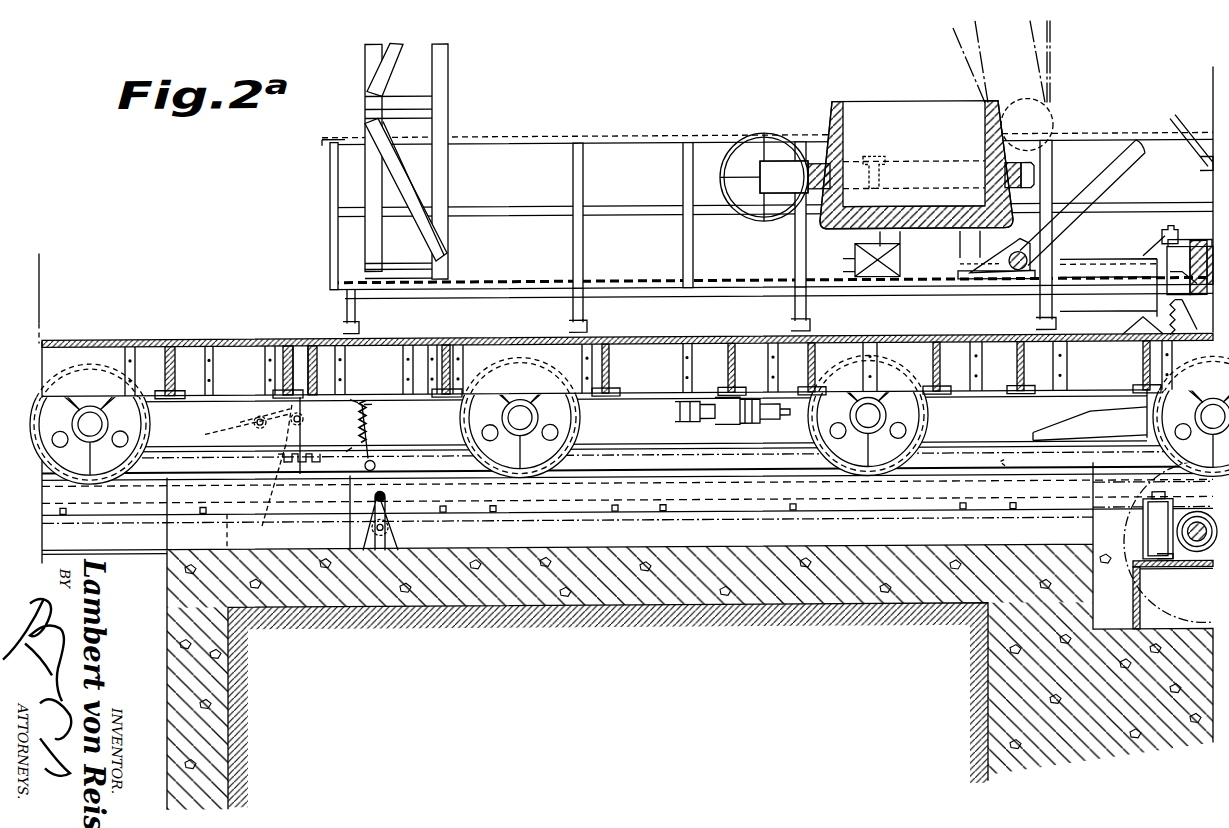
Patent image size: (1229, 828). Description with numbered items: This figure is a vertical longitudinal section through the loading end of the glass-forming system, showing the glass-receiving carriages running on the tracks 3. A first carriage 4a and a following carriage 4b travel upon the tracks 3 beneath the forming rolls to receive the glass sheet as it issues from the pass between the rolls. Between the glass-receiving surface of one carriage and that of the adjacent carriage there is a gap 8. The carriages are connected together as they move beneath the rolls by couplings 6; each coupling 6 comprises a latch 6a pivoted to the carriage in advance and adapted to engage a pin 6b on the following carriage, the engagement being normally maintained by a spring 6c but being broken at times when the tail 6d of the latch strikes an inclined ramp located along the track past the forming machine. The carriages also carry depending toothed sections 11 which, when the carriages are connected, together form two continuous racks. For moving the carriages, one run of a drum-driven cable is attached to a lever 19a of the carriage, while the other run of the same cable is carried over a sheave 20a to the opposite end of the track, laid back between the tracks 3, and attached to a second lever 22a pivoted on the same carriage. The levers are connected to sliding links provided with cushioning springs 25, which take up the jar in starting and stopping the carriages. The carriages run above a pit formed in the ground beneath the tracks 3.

The tracks 3 is at (127, 482).
The glass-receiving carriage 4a is at (492, 335).
The glass-receiving carriage 4b is at (140, 328).
The coupling 6 is at (238, 420).
The latch 6a is at (267, 479).
The pin 6b is at (258, 412).
The spring 6c is at (368, 417).
The tail of the latch 6d is at (376, 461).
The gap 8 is at (308, 335).
The depending toothed section 11 is at (300, 472).
The lever 19a is at (917, 462).
The sheave 20a is at (395, 499).
The second lever 22a is at (1008, 468).
The cushioning spring 25 is at (48, 439).